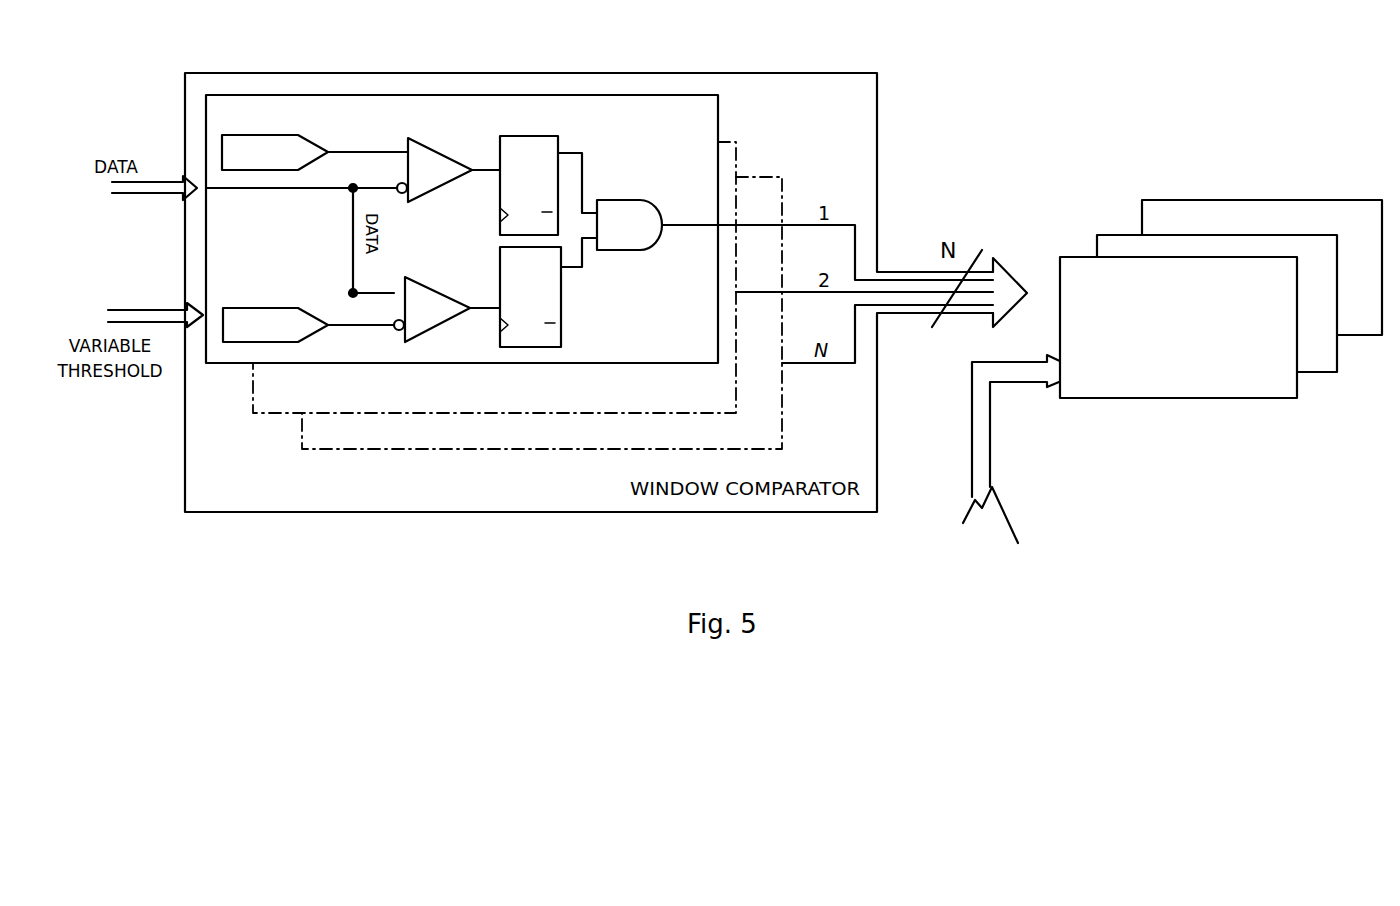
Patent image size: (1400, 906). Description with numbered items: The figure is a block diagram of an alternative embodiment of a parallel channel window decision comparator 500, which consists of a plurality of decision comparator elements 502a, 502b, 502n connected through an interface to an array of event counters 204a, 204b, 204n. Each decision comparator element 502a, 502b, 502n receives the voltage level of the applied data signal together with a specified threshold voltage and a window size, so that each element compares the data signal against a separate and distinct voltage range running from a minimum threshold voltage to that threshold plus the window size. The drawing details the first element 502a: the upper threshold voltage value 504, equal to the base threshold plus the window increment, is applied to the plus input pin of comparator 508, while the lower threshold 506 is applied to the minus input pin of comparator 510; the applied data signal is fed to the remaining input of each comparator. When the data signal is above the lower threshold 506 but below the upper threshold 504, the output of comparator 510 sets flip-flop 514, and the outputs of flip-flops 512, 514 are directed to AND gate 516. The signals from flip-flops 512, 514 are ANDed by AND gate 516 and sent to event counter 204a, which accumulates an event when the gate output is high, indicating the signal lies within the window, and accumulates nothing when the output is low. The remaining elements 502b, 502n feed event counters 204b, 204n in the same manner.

The window decision comparator 500 is at (292, 73).
The decision comparator element 502a is at (333, 363).
The decision comparator element 502b is at (736, 176).
The decision comparator element 502n is at (785, 198).
The threshold voltage (V1+ΔV) 504 is at (278, 134).
The threshold voltage (V1) 506 is at (285, 308).
The comparator 508 is at (428, 147).
The comparator 510 is at (425, 288).
The flip-flop 512 is at (558, 136).
The flip-flop 514 is at (562, 300).
The AND gate 516 is at (625, 200).
The event counter 204a is at (1165, 398).
The event counter 204b is at (1125, 235).
The event counter 204n is at (1232, 200).